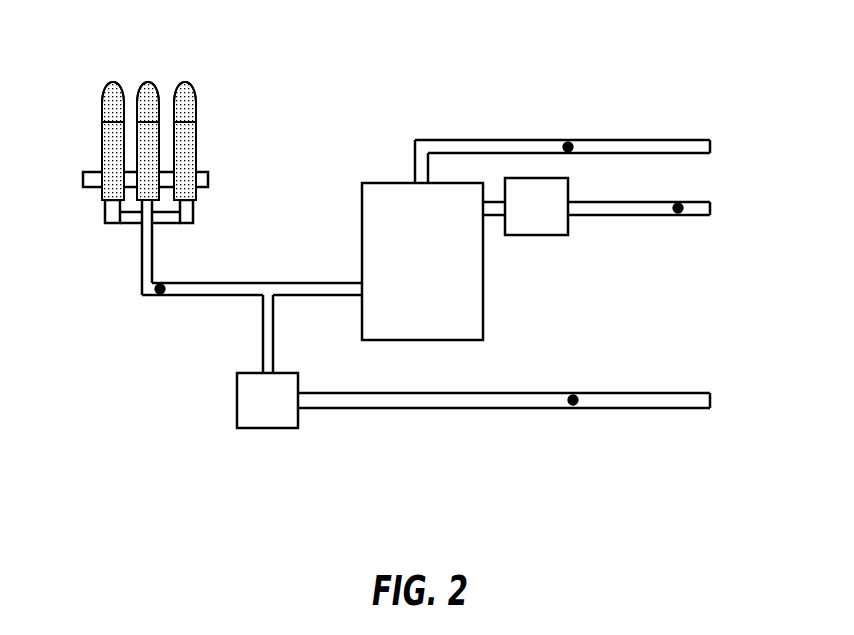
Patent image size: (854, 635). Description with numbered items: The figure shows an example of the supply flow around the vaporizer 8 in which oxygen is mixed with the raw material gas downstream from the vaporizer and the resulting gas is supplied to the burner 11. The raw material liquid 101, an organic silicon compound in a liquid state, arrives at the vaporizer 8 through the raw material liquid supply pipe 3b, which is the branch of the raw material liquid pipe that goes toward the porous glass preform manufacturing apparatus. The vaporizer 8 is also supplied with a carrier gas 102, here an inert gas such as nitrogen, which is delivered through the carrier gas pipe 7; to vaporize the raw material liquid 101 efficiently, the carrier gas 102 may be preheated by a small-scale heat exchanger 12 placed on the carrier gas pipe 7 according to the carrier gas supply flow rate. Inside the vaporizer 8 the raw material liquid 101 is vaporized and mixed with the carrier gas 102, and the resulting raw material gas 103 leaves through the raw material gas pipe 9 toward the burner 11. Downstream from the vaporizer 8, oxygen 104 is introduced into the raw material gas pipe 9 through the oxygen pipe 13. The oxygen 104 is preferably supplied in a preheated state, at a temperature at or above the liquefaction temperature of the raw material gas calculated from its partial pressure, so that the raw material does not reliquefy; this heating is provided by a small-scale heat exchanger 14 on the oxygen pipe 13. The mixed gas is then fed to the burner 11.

The burner 11 is at (207, 82).
The raw material gas pipe 9 is at (197, 297).
The raw material gas 103 is at (143, 298).
The vaporizer 8 is at (457, 275).
The raw material liquid supply pipe 3b is at (637, 135).
The raw material liquid 101 is at (568, 143).
The small-scale heat exchanger 12 is at (540, 212).
The carrier gas pipe 7 is at (692, 200).
The carrier gas 102 is at (692, 218).
The small-scale heat exchanger 14 is at (273, 418).
The oxygen pipe 13 is at (637, 393).
The oxygen 104 is at (580, 395).